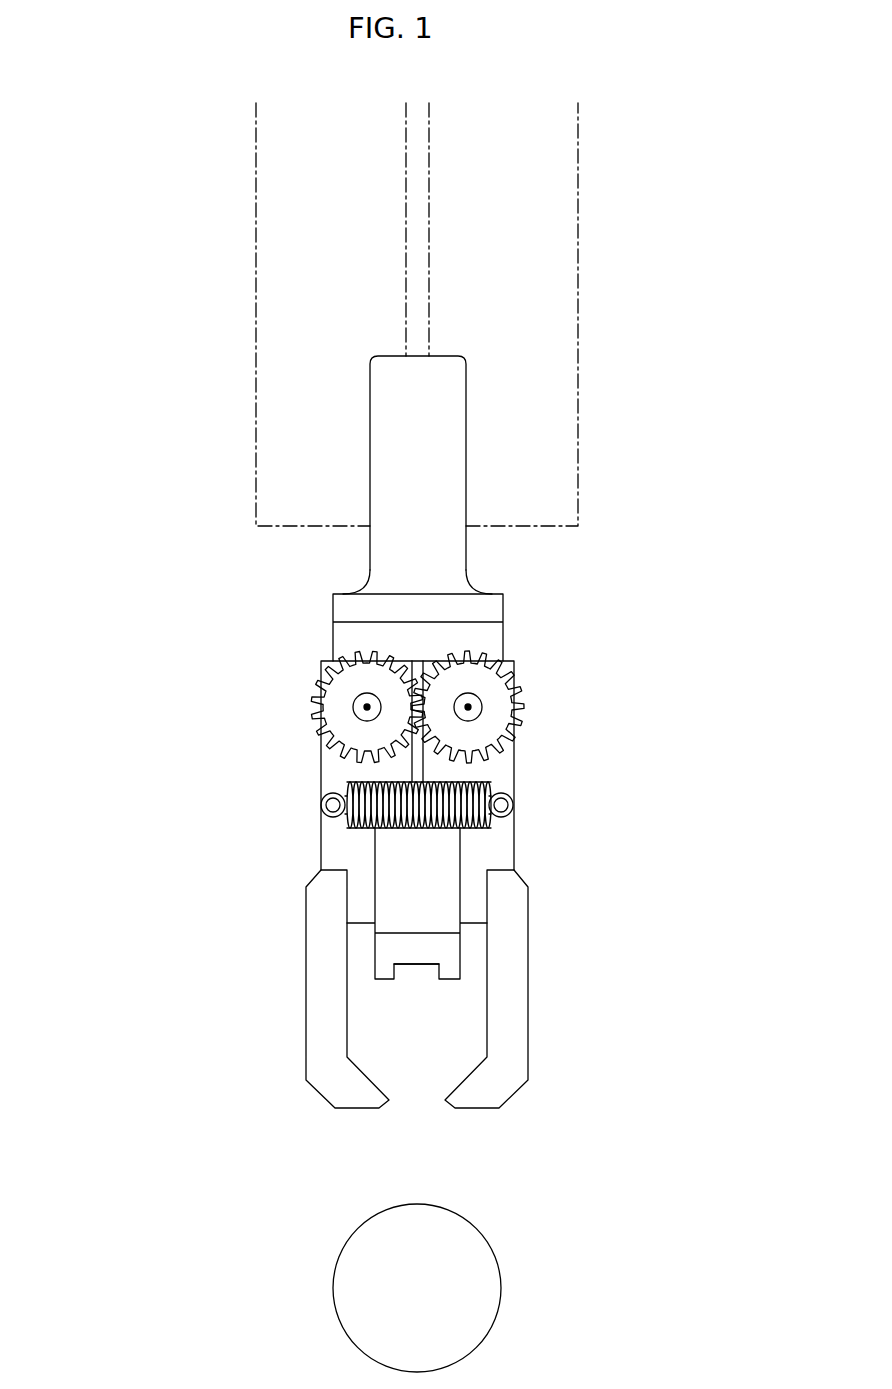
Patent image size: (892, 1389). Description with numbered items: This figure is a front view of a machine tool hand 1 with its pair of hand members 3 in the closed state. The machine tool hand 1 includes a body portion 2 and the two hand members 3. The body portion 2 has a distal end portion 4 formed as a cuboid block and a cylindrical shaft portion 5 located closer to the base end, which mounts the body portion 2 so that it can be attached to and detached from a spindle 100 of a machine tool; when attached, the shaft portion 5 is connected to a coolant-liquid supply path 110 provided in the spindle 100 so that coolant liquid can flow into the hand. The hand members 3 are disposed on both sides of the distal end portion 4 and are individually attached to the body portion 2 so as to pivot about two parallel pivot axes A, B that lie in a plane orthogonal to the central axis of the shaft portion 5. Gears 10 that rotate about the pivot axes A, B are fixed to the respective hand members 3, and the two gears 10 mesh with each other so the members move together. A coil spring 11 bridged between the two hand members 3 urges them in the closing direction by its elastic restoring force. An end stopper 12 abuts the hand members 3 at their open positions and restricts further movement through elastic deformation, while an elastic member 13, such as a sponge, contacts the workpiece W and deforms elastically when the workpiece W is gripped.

The machine tool hand 1 is at (138, 627).
The body portion 2 is at (330, 638).
The hand members 3 is at (306, 957).
The distal end portion 4 is at (462, 897).
The shaft portion 5 is at (370, 427).
The gears 10 is at (317, 683).
The coil spring 11 is at (480, 828).
The end stopper 12 is at (503, 638).
The elastic member 13 is at (444, 979).
The spindle 100 is at (256, 243).
The coolant-liquid supply path 110 is at (420, 172).
The pivot axis A is at (364, 708).
The pivot axis B is at (471, 707).
The workpiece W is at (333, 1280).